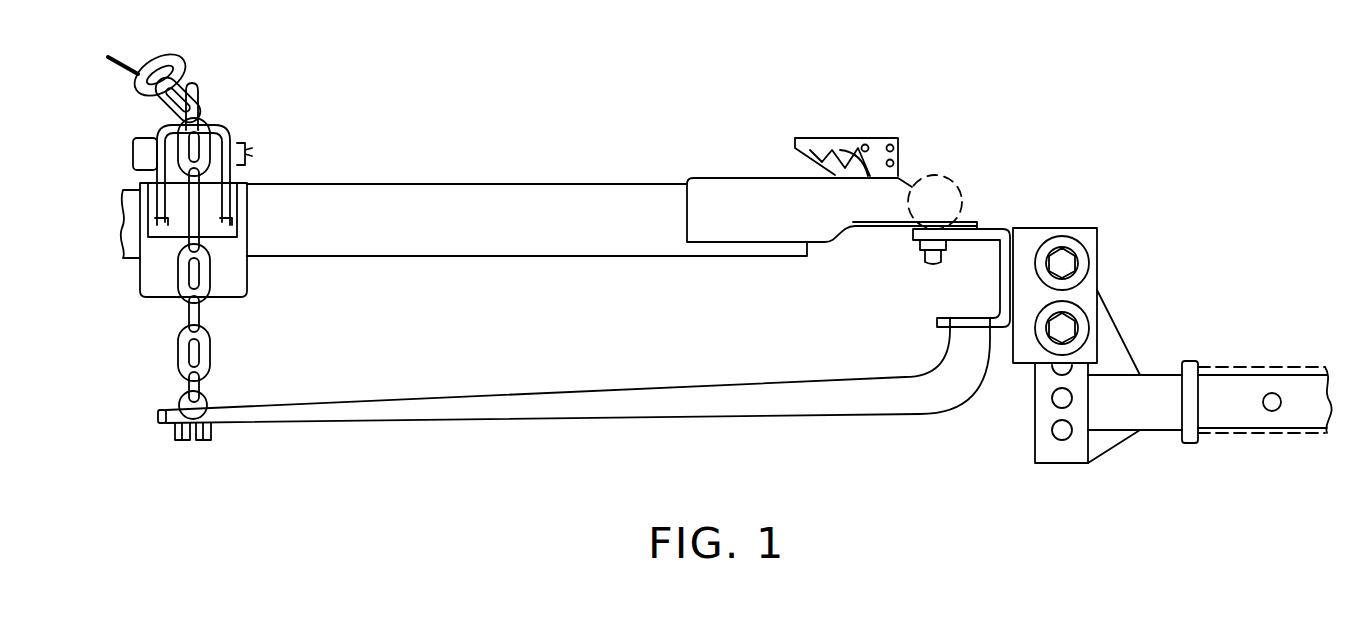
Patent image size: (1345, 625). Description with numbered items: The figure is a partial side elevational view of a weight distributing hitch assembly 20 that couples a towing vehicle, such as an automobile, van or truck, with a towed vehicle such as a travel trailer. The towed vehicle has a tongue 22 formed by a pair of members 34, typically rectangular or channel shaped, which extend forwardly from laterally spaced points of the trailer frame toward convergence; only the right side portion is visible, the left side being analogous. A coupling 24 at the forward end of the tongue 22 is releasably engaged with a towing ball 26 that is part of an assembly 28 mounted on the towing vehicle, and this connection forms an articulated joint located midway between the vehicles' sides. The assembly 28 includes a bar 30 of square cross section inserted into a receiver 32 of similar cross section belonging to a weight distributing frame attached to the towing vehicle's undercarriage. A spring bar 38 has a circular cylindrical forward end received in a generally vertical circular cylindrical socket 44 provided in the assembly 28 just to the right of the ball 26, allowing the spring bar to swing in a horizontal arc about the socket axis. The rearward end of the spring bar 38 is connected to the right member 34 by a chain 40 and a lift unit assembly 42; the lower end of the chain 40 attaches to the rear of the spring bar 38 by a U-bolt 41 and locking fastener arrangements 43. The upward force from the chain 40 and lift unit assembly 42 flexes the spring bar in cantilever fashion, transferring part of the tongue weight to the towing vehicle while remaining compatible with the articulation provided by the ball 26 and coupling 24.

The hitch assembly 20 is at (1028, 115).
The tongue 22 is at (618, 182).
The coupling 24 is at (965, 192).
The towing ball 26 is at (938, 177).
The assembly 28 is at (1097, 228).
The bar 30 is at (1140, 455).
The receiver 32 is at (1220, 365).
The members 34 is at (495, 205).
The spring bar 38 is at (745, 413).
The chain 40 is at (215, 352).
The U-bolt 41 is at (207, 400).
The lift unit assembly 42 is at (255, 174).
The locking fastener arrangements 43 is at (215, 432).
The socket 44 is at (965, 290).